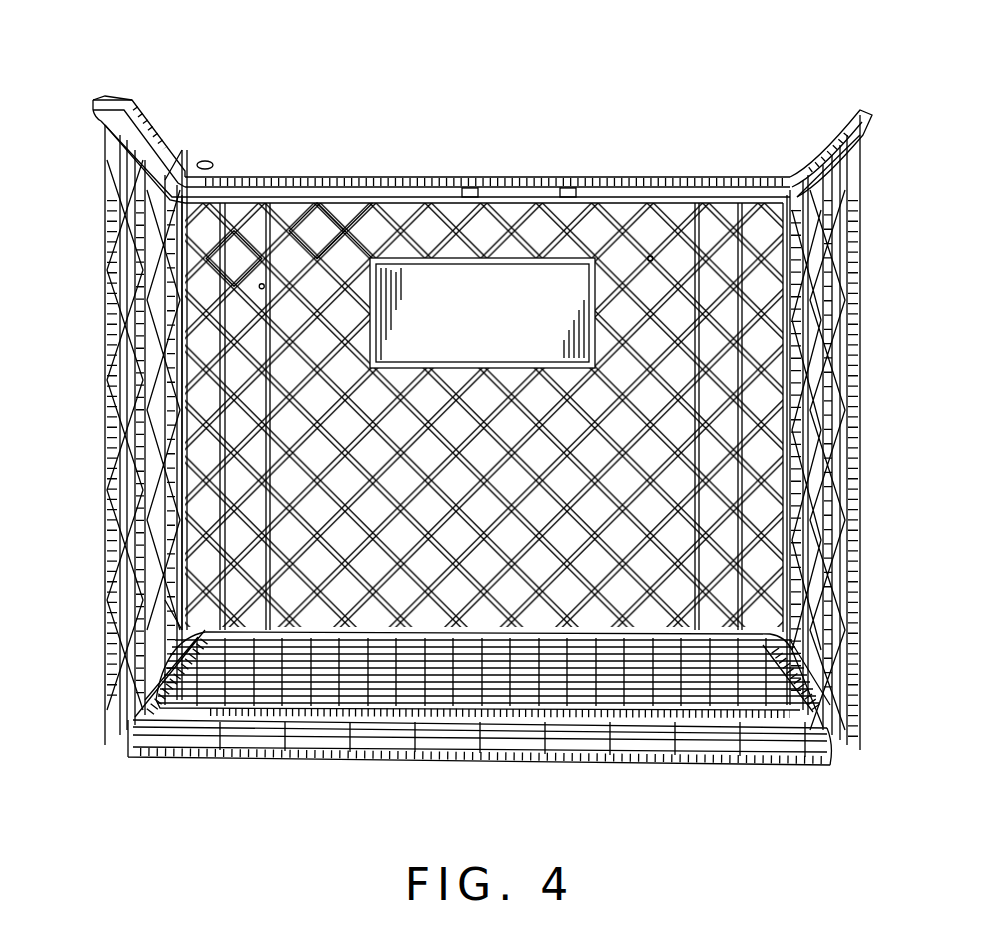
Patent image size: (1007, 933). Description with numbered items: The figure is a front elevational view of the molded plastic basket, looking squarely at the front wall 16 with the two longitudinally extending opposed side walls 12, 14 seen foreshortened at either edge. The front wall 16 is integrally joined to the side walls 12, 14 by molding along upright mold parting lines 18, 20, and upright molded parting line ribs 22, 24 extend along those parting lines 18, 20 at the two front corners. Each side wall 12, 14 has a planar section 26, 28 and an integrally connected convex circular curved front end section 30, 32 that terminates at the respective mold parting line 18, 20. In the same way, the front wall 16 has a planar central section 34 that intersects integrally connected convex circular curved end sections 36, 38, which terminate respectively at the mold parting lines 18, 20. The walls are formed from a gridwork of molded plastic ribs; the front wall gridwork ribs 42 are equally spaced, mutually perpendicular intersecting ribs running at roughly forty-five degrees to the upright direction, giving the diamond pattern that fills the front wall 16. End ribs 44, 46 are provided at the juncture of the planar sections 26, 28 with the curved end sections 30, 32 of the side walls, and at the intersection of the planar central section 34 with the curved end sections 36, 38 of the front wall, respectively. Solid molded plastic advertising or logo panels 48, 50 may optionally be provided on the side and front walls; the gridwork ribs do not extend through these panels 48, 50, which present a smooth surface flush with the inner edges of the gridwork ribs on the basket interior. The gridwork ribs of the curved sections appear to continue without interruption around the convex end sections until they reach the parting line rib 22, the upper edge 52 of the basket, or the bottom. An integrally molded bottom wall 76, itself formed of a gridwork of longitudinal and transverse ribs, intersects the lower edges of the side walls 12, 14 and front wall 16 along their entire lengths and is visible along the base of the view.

The side wall 12 is at (838, 247).
The side wall 14 is at (126, 250).
The front wall 16 is at (507, 245).
The mold parting line 18 is at (763, 208).
The mold parting line 20 is at (228, 225).
The parting line rib 22 is at (768, 618).
The parting line rib 24 is at (225, 553).
The planar section 26 is at (822, 122).
The planar section 28 is at (150, 122).
The convex circular curved front end section 30 is at (767, 183).
The convex circular curved front end section 32 is at (212, 196).
The planar central section 34 is at (368, 210).
The convex circular curved end section 36 is at (700, 235).
The convex circular curved end section 38 is at (313, 225).
The front wall gridwork ribs 42 is at (452, 200).
The end rib 44 is at (190, 545).
The end rib 46 is at (261, 286).
The advertising or logo panel 48 is at (858, 306).
The advertising or logo panel 50 is at (543, 331).
The upper edge 52 is at (168, 140).
The bottom wall 76 is at (187, 770).